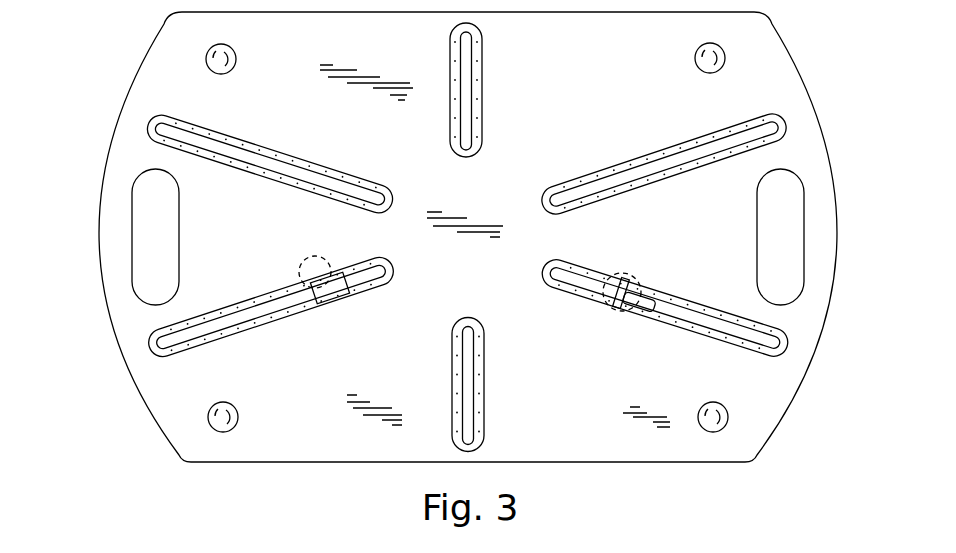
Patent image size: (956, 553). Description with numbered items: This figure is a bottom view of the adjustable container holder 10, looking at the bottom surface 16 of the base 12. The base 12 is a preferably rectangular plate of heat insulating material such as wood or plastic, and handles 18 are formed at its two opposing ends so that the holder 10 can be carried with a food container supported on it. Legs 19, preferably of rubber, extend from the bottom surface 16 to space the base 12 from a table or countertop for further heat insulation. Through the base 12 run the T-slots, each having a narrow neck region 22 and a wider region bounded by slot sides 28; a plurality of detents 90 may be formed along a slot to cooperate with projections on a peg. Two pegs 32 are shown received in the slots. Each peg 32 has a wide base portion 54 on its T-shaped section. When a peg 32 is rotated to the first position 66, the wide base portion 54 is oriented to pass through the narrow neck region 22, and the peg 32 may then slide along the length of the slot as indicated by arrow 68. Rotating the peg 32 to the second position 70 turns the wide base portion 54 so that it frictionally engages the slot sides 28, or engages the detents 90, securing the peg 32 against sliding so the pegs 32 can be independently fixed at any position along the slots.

The adjustable container holder 10 is at (463, 266).
The base 12 is at (603, 463).
The bottom surface 16 is at (606, 74).
The handles 18 is at (98, 234).
The legs 19 is at (230, 72).
The narrow neck region 22 is at (468, 296).
The slot sides 28 is at (578, 264).
The pegs 32 is at (302, 254).
The wide base portion 54 is at (347, 288).
The first position 66 is at (300, 270).
The arrow 68 is at (272, 346).
The second position 70 is at (595, 324).
The detents 90 is at (481, 108).